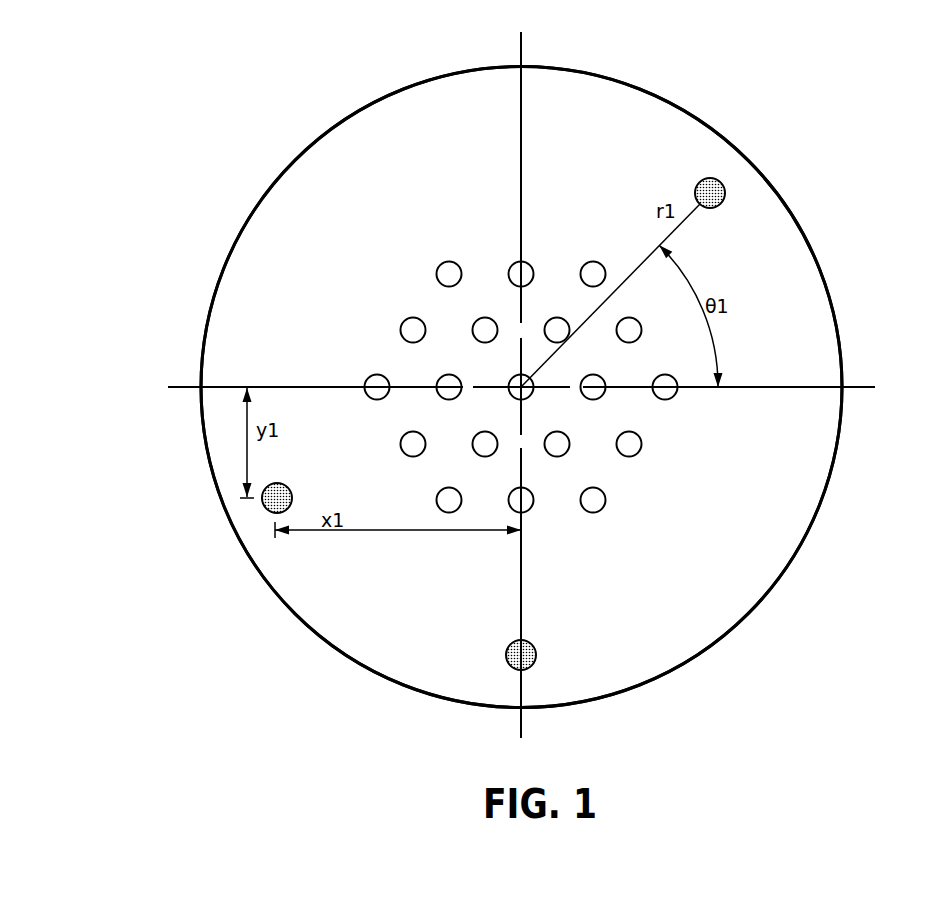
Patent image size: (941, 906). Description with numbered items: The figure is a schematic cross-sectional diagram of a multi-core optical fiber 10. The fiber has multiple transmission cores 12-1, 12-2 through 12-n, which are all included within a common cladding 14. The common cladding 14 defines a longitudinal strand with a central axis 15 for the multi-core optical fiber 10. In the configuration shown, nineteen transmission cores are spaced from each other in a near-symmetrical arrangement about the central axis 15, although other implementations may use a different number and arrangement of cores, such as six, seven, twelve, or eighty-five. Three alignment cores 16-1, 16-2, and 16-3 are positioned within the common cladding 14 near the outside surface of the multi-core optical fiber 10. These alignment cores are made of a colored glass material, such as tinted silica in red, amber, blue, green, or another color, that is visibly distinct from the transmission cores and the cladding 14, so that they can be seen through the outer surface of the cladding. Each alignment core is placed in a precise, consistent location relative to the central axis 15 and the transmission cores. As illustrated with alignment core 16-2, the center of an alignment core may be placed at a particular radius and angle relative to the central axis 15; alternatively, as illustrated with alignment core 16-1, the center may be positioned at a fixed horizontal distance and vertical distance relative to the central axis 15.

The multi-core optical fiber 10 is at (262, 92).
The common cladding 14 is at (782, 338).
The central axis 15 is at (508, 376).
The transmission core 12-1 is at (366, 380).
The transmission core 12-2 is at (405, 456).
The transmission core 12-n is at (678, 392).
The alignment core 16-1 is at (266, 510).
The alignment core 16-2 is at (715, 178).
The alignment core 16-3 is at (532, 667).